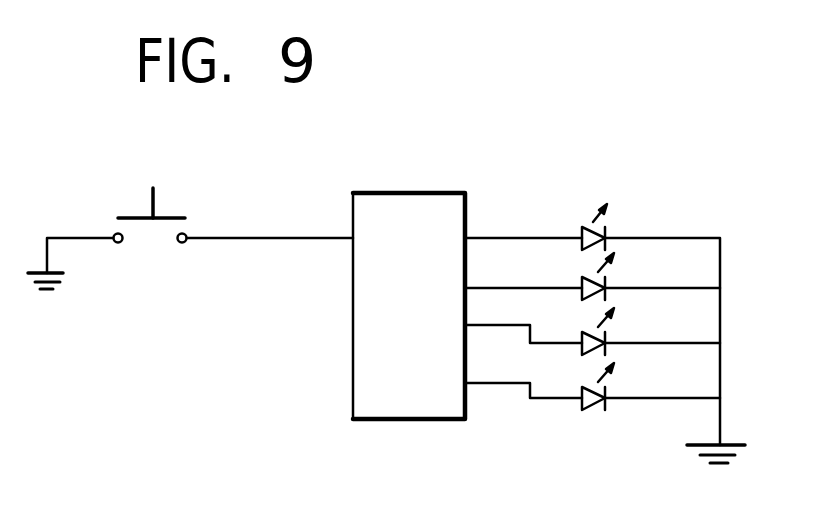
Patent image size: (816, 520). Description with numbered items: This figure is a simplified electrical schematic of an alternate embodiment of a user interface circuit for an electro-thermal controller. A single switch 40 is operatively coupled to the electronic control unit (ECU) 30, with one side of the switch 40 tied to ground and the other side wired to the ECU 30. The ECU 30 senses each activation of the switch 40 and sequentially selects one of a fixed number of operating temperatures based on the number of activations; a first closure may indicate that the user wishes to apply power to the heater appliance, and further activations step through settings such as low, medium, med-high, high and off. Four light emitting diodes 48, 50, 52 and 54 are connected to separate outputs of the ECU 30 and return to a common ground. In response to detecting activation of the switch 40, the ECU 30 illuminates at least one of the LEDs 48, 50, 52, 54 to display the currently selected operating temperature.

The switch 40 is at (125, 218).
The electronic control unit 30 is at (433, 419).
The light emitting diode 48 is at (585, 231).
The light emitting diode 50 is at (582, 277).
The light emitting diode 52 is at (582, 352).
The light emitting diode 54 is at (590, 410).